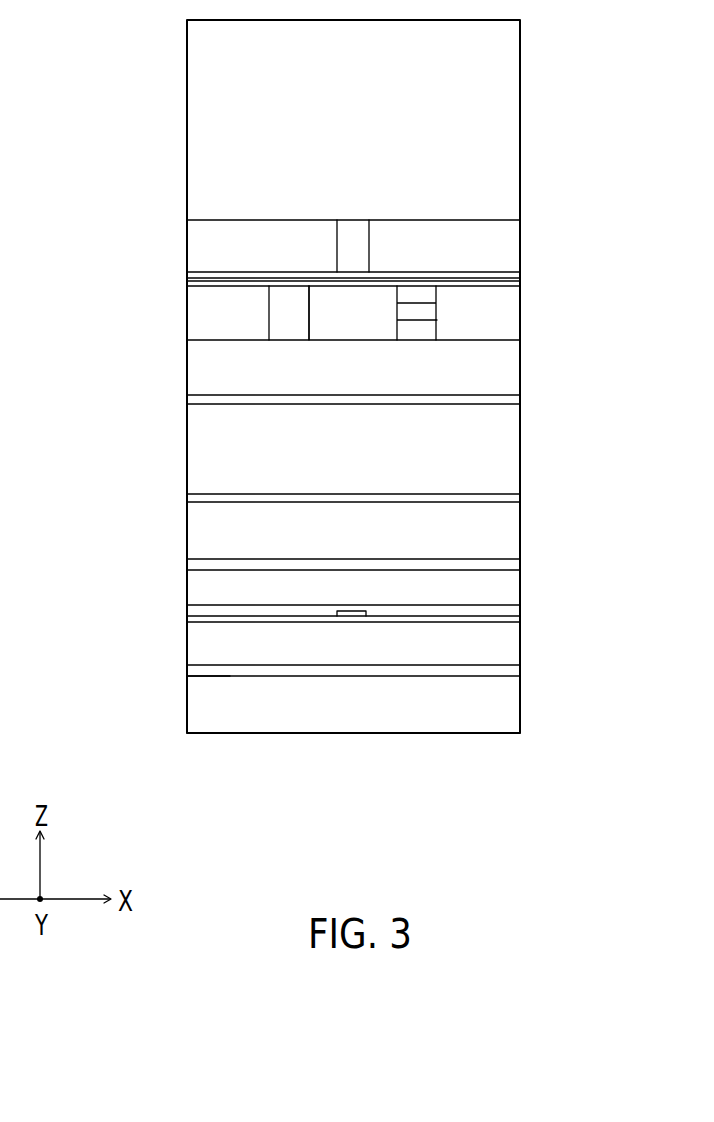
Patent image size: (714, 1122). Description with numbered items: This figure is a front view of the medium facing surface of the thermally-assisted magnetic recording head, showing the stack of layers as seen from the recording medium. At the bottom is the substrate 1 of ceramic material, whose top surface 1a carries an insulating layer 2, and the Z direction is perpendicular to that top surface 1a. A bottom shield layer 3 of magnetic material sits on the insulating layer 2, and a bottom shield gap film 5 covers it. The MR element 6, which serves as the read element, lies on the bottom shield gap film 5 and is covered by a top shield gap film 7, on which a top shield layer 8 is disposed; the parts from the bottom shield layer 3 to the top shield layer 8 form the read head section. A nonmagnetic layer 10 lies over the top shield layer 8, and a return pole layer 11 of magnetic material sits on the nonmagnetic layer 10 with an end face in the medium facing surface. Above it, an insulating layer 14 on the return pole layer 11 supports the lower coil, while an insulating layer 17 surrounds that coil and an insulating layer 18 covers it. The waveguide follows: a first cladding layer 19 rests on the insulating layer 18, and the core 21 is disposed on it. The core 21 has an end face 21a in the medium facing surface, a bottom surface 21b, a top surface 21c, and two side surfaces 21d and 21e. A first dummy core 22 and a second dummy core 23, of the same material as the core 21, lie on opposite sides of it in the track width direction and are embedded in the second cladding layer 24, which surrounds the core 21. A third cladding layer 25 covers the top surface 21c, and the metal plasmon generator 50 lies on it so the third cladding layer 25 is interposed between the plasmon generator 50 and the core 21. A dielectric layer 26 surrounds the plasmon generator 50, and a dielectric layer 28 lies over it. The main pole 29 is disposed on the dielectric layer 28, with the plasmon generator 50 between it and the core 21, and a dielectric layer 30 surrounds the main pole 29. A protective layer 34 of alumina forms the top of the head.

The substrate 1 is at (520, 705).
The top surface 1a is at (200, 677).
The insulating layer 2 is at (520, 670).
The bottom shield layer 3 is at (520, 650).
The bottom shield gap film 5 is at (520, 620).
The MR element 6 is at (347, 617).
The top shield gap film 7 is at (515, 613).
The top shield layer 8 is at (513, 585).
The nonmagnetic layer 10 is at (515, 567).
The return pole layer 11 is at (513, 522).
The insulating layer 14 is at (515, 500).
The insulating layer 17 is at (513, 453).
The insulating layer 18 is at (515, 404).
The first cladding layer 19 is at (515, 380).
The core 21 is at (390, 303).
The end face 21a is at (368, 328).
The bottom surface 21b is at (380, 340).
The top surface 21c is at (320, 290).
The side surface 21d is at (309, 317).
The side surface 21e is at (397, 320).
The first dummy core 22 is at (187, 307).
The second dummy core 23 is at (515, 309).
The second cladding layer 24 is at (285, 290).
The third cladding layer 25 is at (520, 286).
The dielectric layer 26 is at (520, 279).
The dielectric layer 28 is at (520, 273).
The main pole 29 is at (347, 222).
The dielectric layer 30 is at (518, 245).
The protective layer 34 is at (520, 173).
The plasmon generator 50 is at (353, 278).